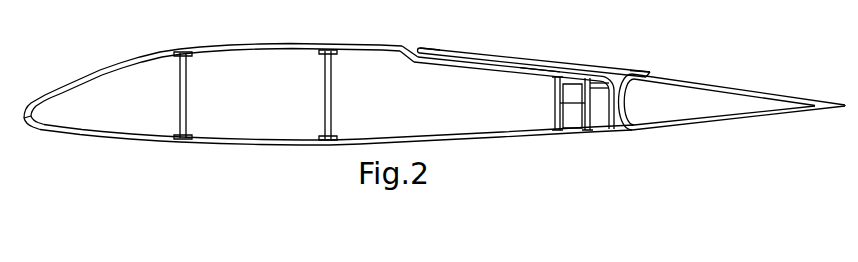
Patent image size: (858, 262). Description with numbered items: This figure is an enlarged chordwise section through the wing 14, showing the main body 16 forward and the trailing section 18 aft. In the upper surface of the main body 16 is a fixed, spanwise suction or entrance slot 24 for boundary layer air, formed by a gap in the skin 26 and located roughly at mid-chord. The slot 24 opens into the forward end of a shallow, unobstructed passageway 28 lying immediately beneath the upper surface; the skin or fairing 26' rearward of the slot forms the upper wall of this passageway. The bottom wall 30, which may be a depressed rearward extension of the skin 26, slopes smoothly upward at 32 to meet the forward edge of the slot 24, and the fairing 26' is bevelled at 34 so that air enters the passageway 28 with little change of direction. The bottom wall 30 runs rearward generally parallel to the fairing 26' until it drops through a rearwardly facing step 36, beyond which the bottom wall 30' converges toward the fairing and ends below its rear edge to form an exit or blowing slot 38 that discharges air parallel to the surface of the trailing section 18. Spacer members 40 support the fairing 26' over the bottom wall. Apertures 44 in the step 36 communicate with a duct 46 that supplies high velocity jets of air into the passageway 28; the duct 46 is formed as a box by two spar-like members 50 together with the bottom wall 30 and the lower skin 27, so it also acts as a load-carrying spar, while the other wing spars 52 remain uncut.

The wing 14 is at (78, 77).
The wing main body 16 is at (108, 142).
The trailing section 18 is at (697, 125).
The suction or entrance slot 24 is at (411, 46).
The skin 26 is at (213, 54).
The skin or fairing 26' is at (534, 52).
The skin on bottom surface 27 is at (575, 128).
The passageway 28 is at (535, 66).
The bottom wall 30 is at (507, 76).
The bottom wall rearward portion 30' is at (624, 64).
The sloping portion 32 is at (416, 58).
The bevel 34 is at (423, 49).
The rearwardly facing step 36 is at (603, 82).
The exit or blowing slot 38 is at (646, 84).
The spacer members 40 is at (628, 71).
The apertures 44 is at (557, 83).
The duct 46 is at (606, 132).
The spar-like members 50 is at (562, 104).
The wing spars 52 is at (343, 95).